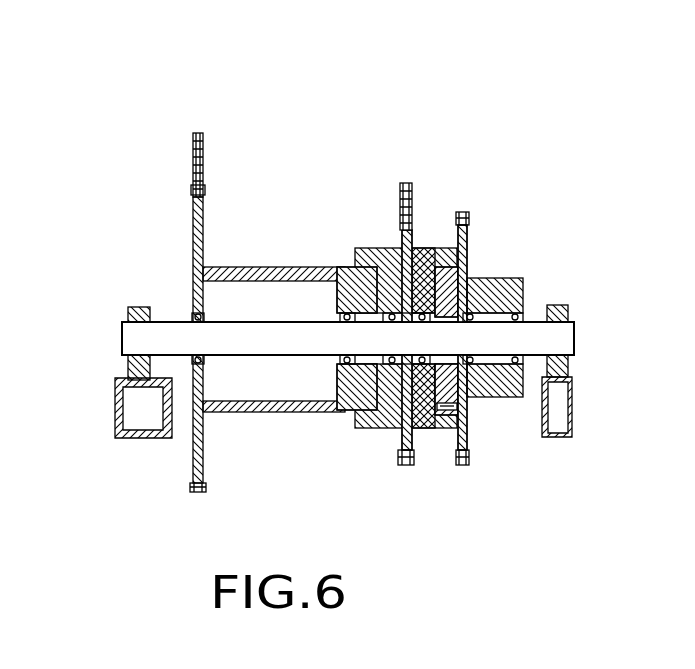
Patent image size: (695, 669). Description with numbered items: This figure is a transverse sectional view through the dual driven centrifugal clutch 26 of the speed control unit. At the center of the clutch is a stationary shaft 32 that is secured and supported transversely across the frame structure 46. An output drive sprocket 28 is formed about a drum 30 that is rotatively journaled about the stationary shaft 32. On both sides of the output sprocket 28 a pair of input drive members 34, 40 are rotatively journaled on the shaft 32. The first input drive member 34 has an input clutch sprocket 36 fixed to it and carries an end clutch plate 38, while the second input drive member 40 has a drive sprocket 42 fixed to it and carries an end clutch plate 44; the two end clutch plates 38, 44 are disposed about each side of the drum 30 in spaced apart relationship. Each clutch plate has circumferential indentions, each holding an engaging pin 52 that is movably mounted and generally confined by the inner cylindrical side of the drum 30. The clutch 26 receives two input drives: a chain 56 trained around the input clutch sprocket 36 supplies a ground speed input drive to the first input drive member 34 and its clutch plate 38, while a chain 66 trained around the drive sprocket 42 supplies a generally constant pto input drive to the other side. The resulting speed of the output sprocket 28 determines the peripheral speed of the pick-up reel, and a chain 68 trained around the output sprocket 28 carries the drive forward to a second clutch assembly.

The dual driven centrifugal clutch 26 is at (484, 74).
The output drive sprocket 28 is at (404, 235).
The drum 30 is at (375, 428).
The stationary shaft 32 is at (574, 337).
The first input drive member 34 is at (498, 278).
The input clutch sprocket 36 is at (468, 233).
The end clutch plate 38 is at (472, 425).
The second input drive member 40 is at (290, 412).
The drive sprocket 42 is at (193, 465).
The end clutch plate 44 is at (345, 290).
The frame structure 46 is at (115, 420).
The engaging pin 52 is at (443, 428).
The chain 56 is at (468, 215).
The chain 66 is at (193, 167).
The chain 68 is at (400, 195).